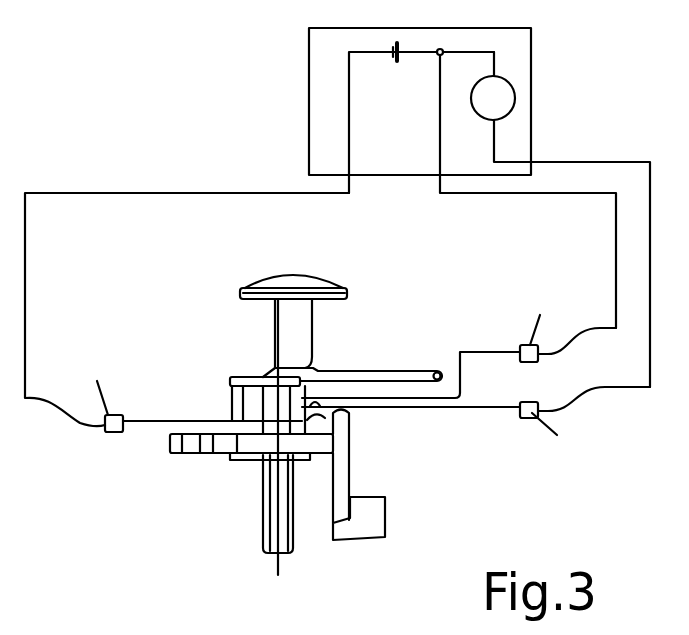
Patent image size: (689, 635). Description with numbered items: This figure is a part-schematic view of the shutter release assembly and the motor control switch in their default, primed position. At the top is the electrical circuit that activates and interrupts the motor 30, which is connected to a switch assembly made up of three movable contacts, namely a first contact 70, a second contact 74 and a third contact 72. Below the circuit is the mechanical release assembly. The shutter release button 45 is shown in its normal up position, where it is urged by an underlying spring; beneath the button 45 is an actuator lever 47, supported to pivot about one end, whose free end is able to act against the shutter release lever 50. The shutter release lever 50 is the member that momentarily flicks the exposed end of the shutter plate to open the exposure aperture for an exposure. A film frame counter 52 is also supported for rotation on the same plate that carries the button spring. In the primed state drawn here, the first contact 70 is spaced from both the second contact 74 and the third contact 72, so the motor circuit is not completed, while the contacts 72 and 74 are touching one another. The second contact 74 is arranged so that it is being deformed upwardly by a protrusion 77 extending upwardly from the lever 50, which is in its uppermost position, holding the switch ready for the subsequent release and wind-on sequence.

The motor 30 is at (515, 100).
The shutter release button 45 is at (312, 280).
The actuator lever 47 is at (402, 372).
The third contact 72 is at (452, 395).
The first contact 70 is at (195, 418).
The protrusion 77 is at (345, 413).
The second contact 74 is at (423, 410).
The shutter release lever 50 is at (225, 450).
The film frame counter 52 is at (368, 513).